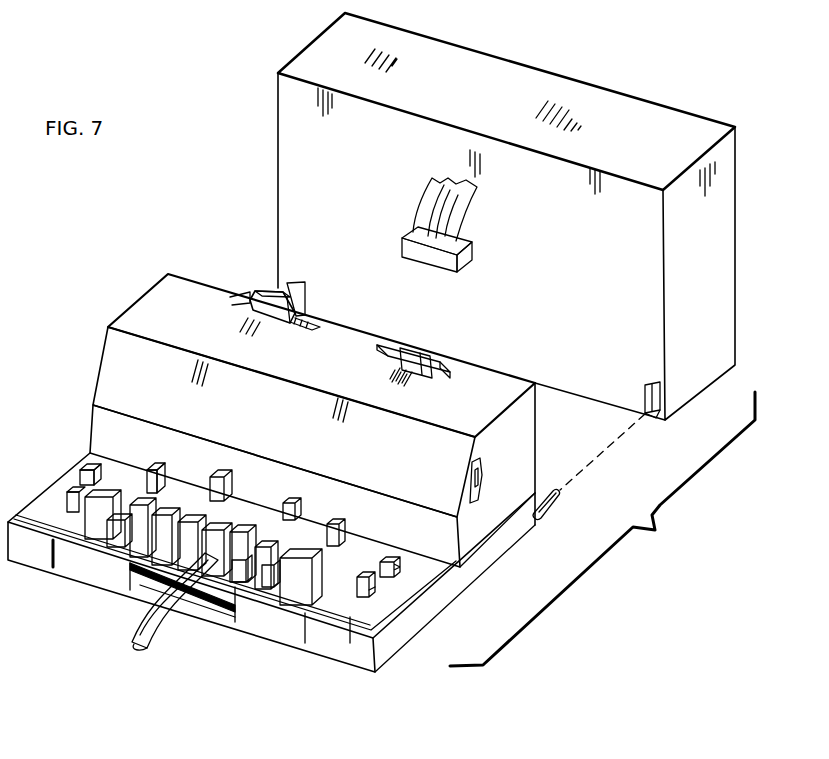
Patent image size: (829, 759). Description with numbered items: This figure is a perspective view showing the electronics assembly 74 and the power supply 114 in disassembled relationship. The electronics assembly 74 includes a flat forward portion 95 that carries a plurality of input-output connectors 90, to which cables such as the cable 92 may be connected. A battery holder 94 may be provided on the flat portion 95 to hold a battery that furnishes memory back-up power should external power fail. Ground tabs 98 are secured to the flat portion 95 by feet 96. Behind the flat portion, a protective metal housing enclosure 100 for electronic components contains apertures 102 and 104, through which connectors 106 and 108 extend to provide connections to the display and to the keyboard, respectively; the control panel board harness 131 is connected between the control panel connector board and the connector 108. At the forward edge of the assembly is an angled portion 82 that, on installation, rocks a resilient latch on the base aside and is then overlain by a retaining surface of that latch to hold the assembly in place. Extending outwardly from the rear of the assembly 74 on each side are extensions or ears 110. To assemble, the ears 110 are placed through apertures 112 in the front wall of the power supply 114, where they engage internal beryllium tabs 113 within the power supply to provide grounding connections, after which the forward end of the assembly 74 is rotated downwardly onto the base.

The electronics assembly 74 is at (488, 593).
The angled portion 82 is at (135, 599).
The input-output connectors 90 is at (212, 616).
The cable 92 is at (153, 639).
The battery holder 94 is at (155, 465).
The flat forward portion 95 is at (350, 616).
The feet 96 is at (375, 592).
The ground tabs 98 is at (366, 594).
The protective metal housing enclosure 100 is at (103, 380).
The aperture 102 is at (302, 336).
The aperture 104 is at (432, 382).
The connector 106 is at (268, 290).
The connector 108 is at (425, 358).
The ears 110 is at (561, 499).
The apertures 112 is at (655, 415).
The beryllium tabs 113 is at (648, 402).
The power supply 114 is at (497, 63).
The control panel board harness 131 is at (455, 223).